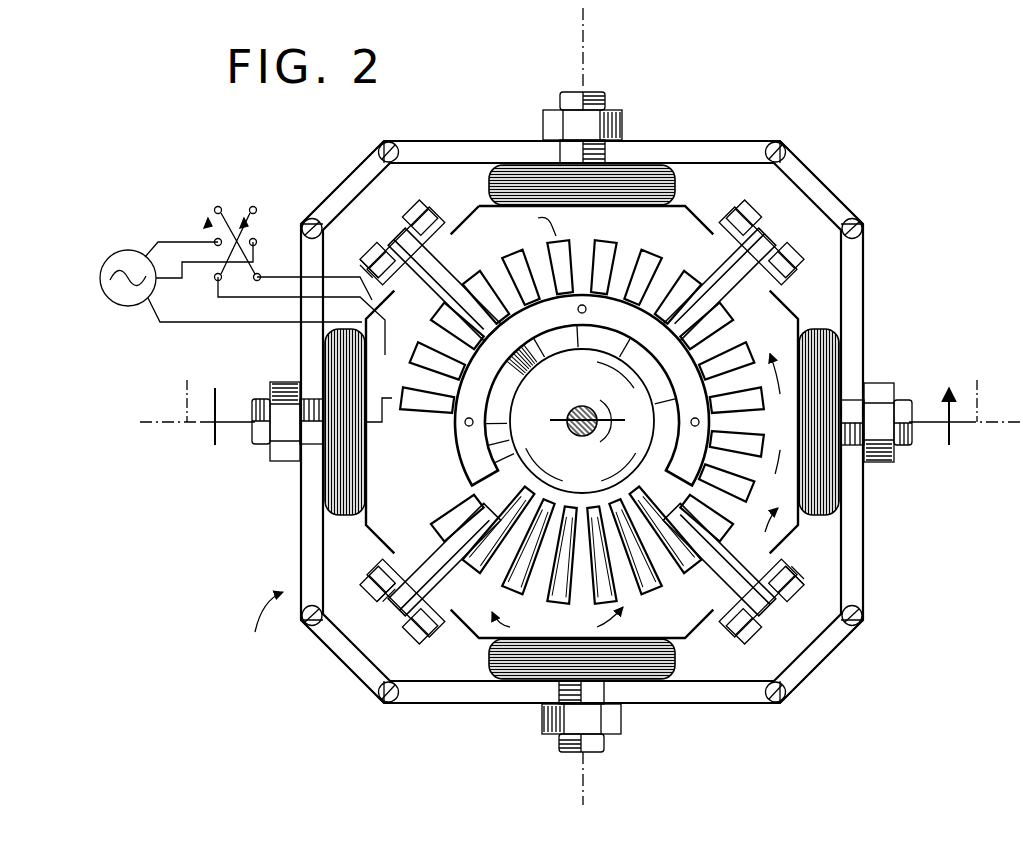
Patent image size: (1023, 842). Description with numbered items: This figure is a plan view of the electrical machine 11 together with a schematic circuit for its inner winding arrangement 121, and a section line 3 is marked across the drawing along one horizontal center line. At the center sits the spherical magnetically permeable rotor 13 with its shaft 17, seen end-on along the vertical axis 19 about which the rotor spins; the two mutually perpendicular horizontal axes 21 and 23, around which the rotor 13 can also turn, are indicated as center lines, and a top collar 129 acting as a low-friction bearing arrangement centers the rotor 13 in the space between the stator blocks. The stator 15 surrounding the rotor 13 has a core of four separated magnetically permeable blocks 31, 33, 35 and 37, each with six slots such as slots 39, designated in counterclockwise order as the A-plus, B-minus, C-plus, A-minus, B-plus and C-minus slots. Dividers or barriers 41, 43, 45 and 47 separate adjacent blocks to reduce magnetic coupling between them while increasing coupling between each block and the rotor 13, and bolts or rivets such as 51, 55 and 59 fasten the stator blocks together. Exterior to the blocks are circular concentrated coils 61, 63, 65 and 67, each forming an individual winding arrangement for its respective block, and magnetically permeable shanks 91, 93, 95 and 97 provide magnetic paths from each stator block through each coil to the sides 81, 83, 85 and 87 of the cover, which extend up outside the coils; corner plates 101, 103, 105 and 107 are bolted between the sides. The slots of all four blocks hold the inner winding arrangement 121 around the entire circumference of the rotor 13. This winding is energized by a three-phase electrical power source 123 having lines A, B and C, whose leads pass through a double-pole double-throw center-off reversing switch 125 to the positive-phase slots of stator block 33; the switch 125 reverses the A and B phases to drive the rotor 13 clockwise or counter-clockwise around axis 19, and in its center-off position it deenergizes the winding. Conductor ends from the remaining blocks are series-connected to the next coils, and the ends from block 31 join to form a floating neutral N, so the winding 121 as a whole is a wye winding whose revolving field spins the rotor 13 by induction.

The electrical machine 11 is at (420, 104).
The rotor 13 is at (612, 440).
The stator 15 is at (263, 623).
The shaft 17 is at (600, 414).
The vertical axis 19 is at (586, 434).
The horizontal axis 21 is at (590, 66).
The horizontal axis 23 is at (581, 388).
The section line 3 is at (585, 419).
The stator block 31 is at (668, 226).
The stator block 33 is at (400, 540).
The stator block 35 is at (513, 624).
The stator block 37 is at (764, 530).
The slots 39 is at (593, 622).
The divider 41 is at (718, 291).
The divider 43 is at (436, 270).
The divider 45 is at (435, 582).
The divider 47 is at (722, 580).
The bolt or rivet 51 is at (735, 641).
The bolt or rivet 55 is at (410, 212).
The bolt or rivet 59 is at (405, 635).
The circular concentrated coil 61 is at (680, 195).
The circular concentrated coil 63 is at (345, 512).
The circular concentrated coil 65 is at (497, 672).
The circular concentrated coil 67 is at (812, 525).
The side 81 is at (506, 140).
The side 83 is at (305, 548).
The side 85 is at (480, 702).
The side 87 is at (860, 560).
The shank 91 is at (622, 112).
The shank 93 is at (276, 395).
The shank 95 is at (622, 742).
The shank 97 is at (895, 392).
The corner plate 101 is at (818, 185).
The corner plate 103 is at (350, 176).
The corner plate 105 is at (355, 668).
The corner plate 107 is at (810, 670).
The inner winding arrangement 121 is at (768, 414).
The three-phase electrical power source 123 is at (136, 250).
The reversing switch 125 is at (272, 188).
The top collar 129 is at (523, 365).